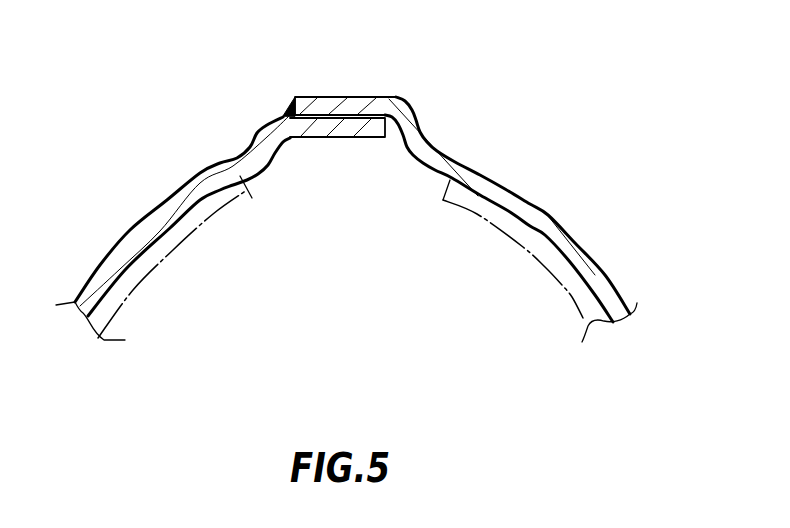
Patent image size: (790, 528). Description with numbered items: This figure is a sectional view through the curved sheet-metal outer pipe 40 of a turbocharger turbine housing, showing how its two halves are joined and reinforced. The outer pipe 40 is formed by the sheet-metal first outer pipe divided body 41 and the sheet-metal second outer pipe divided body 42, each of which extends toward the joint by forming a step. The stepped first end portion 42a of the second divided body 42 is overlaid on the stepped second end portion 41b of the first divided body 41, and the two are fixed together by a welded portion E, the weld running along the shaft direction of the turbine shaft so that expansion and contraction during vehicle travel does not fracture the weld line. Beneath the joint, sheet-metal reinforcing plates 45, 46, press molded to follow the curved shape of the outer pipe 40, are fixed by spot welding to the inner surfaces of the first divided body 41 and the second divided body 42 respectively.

The outer pipe 40 is at (371, 195).
The first outer pipe divided body 41 is at (131, 230).
The second outer pipe divided body 42 is at (568, 230).
The second end portion 41b is at (338, 130).
The first end portion 42a is at (333, 100).
The plate 45 is at (153, 264).
The plate 46 is at (542, 265).
The welded portion E is at (290, 108).